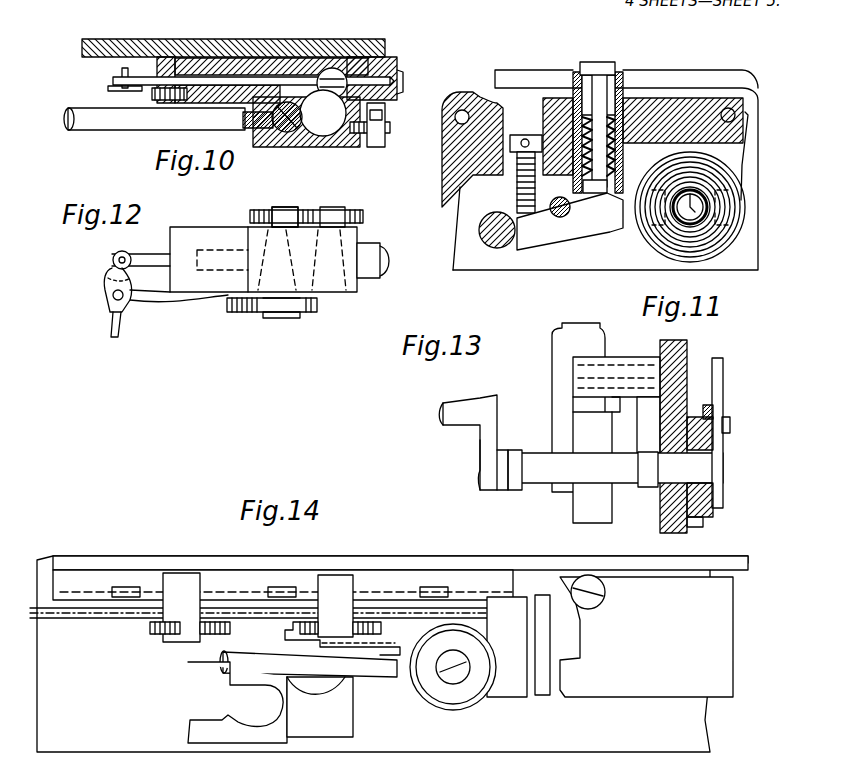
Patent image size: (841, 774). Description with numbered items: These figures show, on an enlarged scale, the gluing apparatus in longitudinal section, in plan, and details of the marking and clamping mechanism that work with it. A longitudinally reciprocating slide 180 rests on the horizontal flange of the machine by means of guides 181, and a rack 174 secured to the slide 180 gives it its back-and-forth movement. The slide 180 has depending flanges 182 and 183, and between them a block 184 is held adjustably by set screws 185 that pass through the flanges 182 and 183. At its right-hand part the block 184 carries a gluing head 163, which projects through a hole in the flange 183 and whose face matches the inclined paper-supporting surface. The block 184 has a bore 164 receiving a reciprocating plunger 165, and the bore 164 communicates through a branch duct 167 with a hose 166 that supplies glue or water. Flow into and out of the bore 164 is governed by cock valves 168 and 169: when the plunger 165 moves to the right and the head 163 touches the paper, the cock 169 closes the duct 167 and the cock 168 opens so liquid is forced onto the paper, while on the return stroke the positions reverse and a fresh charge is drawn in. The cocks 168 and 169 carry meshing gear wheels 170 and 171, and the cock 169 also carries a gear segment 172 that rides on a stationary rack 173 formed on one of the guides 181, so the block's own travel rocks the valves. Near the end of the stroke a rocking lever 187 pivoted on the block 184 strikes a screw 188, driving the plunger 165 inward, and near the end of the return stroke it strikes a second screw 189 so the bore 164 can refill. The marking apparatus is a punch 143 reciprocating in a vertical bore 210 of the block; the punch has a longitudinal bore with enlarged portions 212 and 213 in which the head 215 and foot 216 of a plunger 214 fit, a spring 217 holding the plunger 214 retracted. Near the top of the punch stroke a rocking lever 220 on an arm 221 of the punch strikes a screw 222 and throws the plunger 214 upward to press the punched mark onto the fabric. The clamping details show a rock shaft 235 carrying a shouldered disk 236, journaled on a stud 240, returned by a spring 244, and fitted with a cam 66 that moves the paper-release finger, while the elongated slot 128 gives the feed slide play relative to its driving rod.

In FIG. 13, the cam 66 is at (649, 483).
In FIG. 14, the elongated slot 128 is at (229, 686).
In FIG. 11, the punch 143 is at (638, 133).
In FIG. 10, the gluing head 163 is at (389, 74).
In FIG. 12, the gluing head 163 is at (374, 252).
In FIG. 10, the bore 164 is at (292, 82).
In FIG. 10, the plunger 165 is at (195, 80).
In FIG. 12, the plunger 165 is at (142, 257).
In FIG. 10, the hose 166 is at (94, 122).
In FIG. 10, the branch duct 167 is at (323, 134).
In FIG. 10, the cock valve 168 is at (343, 63).
In FIG. 12, the cock valve 168 is at (330, 278).
In FIG. 10, the cock valve 169 is at (281, 131).
In FIG. 12, the cock valve 169 is at (274, 264).
In FIG. 12, the gear wheel 170 is at (365, 217).
In FIG. 12, the gear wheel 171 is at (317, 205).
In FIG. 12, the gear segment 172 is at (303, 288).
In FIG. 14, the gear segment 172 is at (433, 690).
In FIG. 14, the rack 173 is at (402, 597).
In FIG. 14, the rack 174 is at (102, 620).
In FIG. 10, the slide 180 is at (163, 50).
In FIG. 14, the guides 181 is at (108, 580).
In FIG. 10, the depending flange 182 is at (152, 66).
In FIG. 10, the depending flange 183 is at (379, 134).
In FIG. 10, the block 184 is at (252, 64).
In FIG. 10, the set screws 185 is at (157, 101).
In FIG. 12, the rocking lever 187 is at (110, 272).
In FIG. 14, the screw 188 is at (293, 626).
In FIG. 14, the screw 189 is at (197, 642).
In FIG. 11, the vertical bore 210 is at (631, 117).
In FIG. 11, the enlarged portion 212 is at (628, 80).
In FIG. 11, the enlarged portion 213 is at (676, 147).
In FIG. 11, the plunger 214 is at (597, 108).
In FIG. 11, the enlarged head 215 is at (611, 88).
In FIG. 11, the enlarged foot 216 is at (597, 187).
In FIG. 11, the spring 217 is at (575, 112).
In FIG. 11, the rocking lever 220 is at (545, 216).
In FIG. 11, the arm 221 is at (613, 222).
In FIG. 11, the screw 222 is at (517, 190).
In FIG. 13, the rock shaft 235 is at (536, 475).
In FIG. 13, the disk 236 is at (716, 458).
In FIG. 13, the stud 240 is at (718, 486).
In FIG. 13, the spring 244 is at (594, 514).